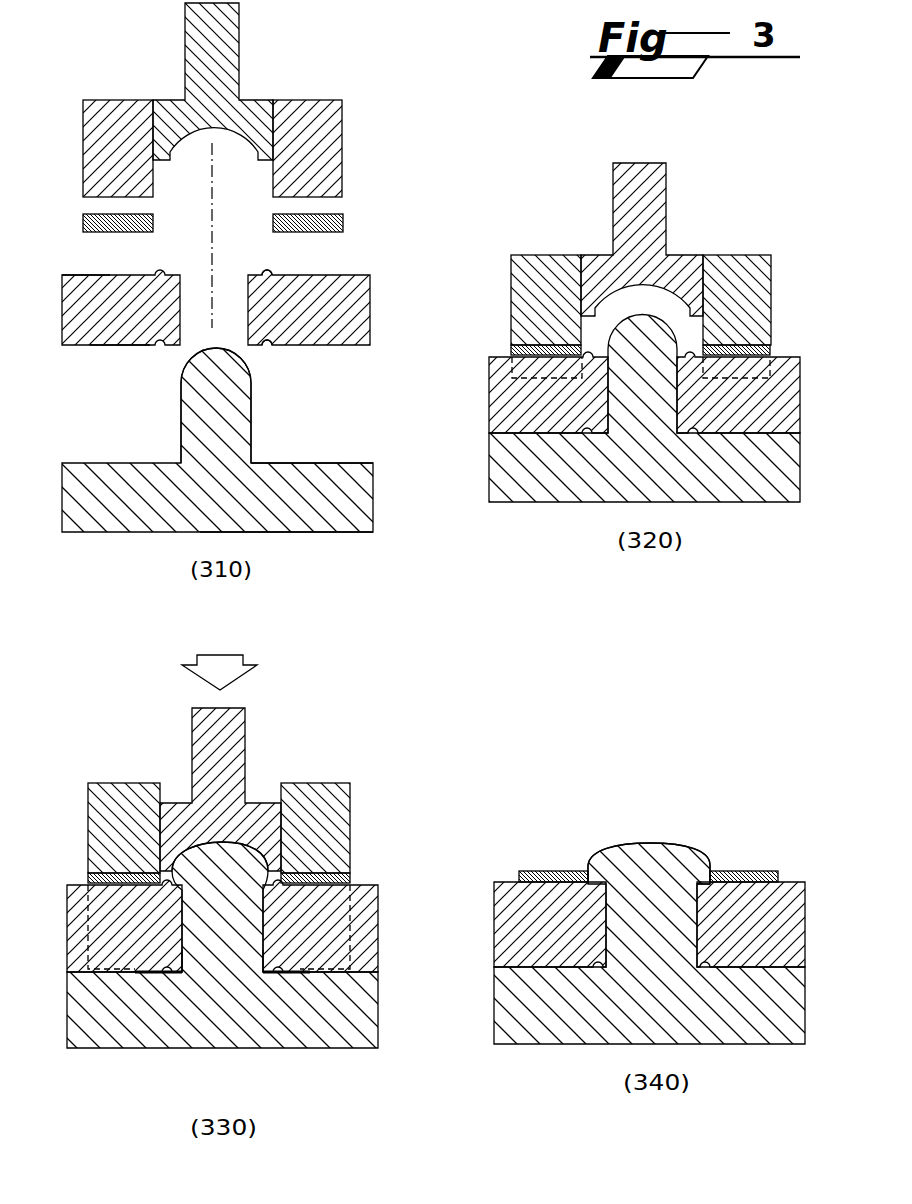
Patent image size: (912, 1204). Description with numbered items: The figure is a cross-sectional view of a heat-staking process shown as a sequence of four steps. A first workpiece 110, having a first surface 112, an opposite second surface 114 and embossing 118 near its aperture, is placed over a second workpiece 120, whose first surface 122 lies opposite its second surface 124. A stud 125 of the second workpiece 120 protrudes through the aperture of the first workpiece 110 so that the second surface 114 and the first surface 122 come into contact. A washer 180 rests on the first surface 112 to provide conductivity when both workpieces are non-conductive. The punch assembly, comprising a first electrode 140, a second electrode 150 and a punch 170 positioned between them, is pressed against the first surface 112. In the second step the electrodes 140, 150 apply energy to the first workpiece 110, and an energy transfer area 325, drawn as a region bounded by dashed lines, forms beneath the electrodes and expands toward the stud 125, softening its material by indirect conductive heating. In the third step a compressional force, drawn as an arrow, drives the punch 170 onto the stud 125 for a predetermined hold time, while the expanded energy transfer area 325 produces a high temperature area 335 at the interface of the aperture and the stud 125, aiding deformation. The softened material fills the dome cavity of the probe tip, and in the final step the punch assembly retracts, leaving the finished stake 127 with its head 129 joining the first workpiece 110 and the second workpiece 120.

The first workpiece 110 is at (88, 328).
The first surface 112 is at (83, 275).
The second surface 114 is at (128, 347).
The embossing 118 is at (263, 277).
The second workpiece 120 is at (363, 498).
The first surface 122 is at (364, 462).
The second surface 124 is at (323, 533).
The stud 125 is at (233, 440).
The finished stake 127 is at (690, 905).
The head 129 is at (653, 843).
The first electrode 140 is at (122, 100).
The second electrode 150 is at (307, 100).
The punch 170 is at (240, 55).
The washer 180 is at (347, 222).
The energy transfer area 325 is at (540, 378).
The high temperature area 335 is at (183, 953).